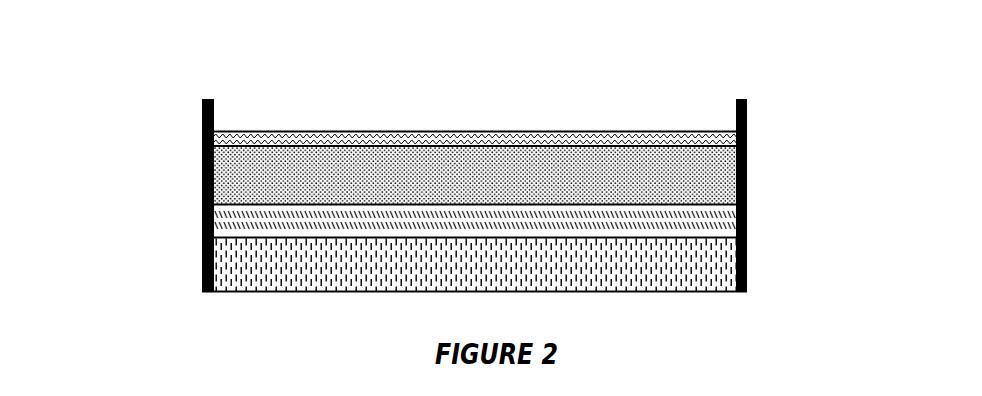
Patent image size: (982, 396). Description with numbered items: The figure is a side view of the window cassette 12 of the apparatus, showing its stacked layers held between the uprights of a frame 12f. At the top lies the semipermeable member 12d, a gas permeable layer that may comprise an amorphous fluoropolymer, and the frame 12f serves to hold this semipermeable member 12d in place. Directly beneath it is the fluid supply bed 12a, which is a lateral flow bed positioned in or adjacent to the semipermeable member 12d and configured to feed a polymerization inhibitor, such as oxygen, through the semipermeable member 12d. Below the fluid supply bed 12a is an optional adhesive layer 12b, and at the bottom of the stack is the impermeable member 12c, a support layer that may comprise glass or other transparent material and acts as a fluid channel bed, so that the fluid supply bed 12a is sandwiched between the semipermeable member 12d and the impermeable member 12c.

The window cassette 12 is at (140, 82).
The fluid supply bed 12a is at (697, 168).
The adhesive layer 12b is at (747, 222).
The impermeable member 12c is at (662, 273).
The semipermeable member 12d is at (561, 131).
The frame 12f is at (748, 105).